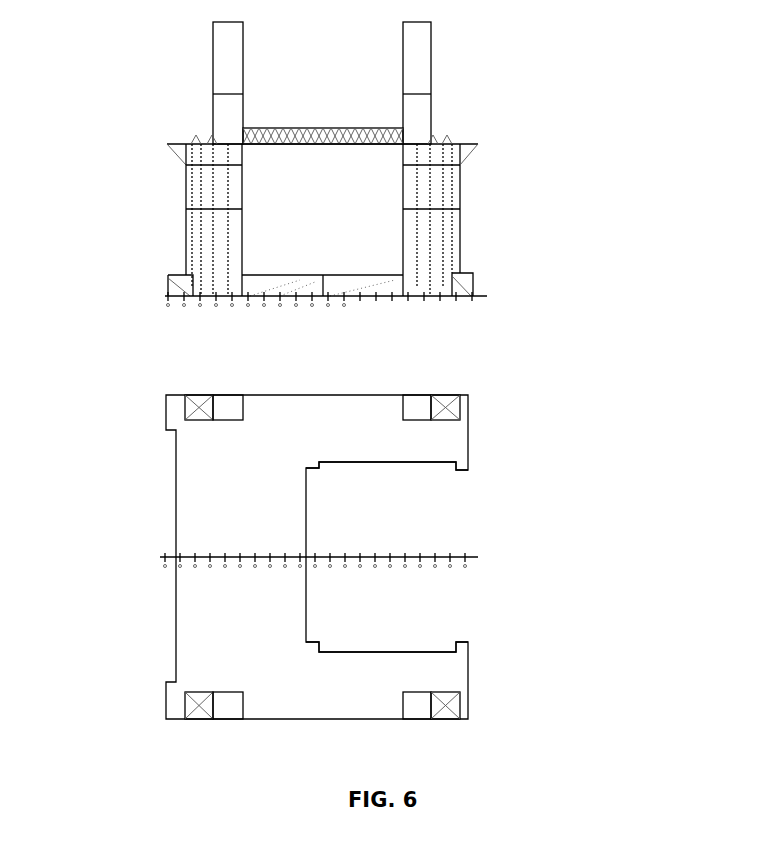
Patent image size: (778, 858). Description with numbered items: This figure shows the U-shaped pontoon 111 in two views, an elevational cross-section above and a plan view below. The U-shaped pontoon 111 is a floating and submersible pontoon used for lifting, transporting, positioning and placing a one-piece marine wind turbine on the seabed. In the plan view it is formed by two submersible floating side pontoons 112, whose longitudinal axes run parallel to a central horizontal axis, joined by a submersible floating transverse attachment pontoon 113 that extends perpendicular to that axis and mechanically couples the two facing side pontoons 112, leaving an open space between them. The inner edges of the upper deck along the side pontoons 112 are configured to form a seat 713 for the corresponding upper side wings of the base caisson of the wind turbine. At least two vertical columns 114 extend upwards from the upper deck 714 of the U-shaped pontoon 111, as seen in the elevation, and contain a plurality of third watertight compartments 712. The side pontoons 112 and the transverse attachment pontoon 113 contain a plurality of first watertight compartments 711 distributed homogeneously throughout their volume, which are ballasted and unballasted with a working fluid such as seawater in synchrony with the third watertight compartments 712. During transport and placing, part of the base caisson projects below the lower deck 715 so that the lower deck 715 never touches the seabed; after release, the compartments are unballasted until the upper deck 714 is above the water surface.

The U-shaped pontoon 111 is at (388, 192).
The side pontoon 112 is at (407, 547).
The transverse attachment pontoon 113 is at (378, 272).
The vertical column 114 is at (176, 140).
The first watertight compartment 711 is at (278, 285).
The third watertight compartment 712 is at (221, 223).
The seat 713 is at (397, 649).
The upper deck 714 is at (424, 444).
The lower deck 715 is at (228, 297).